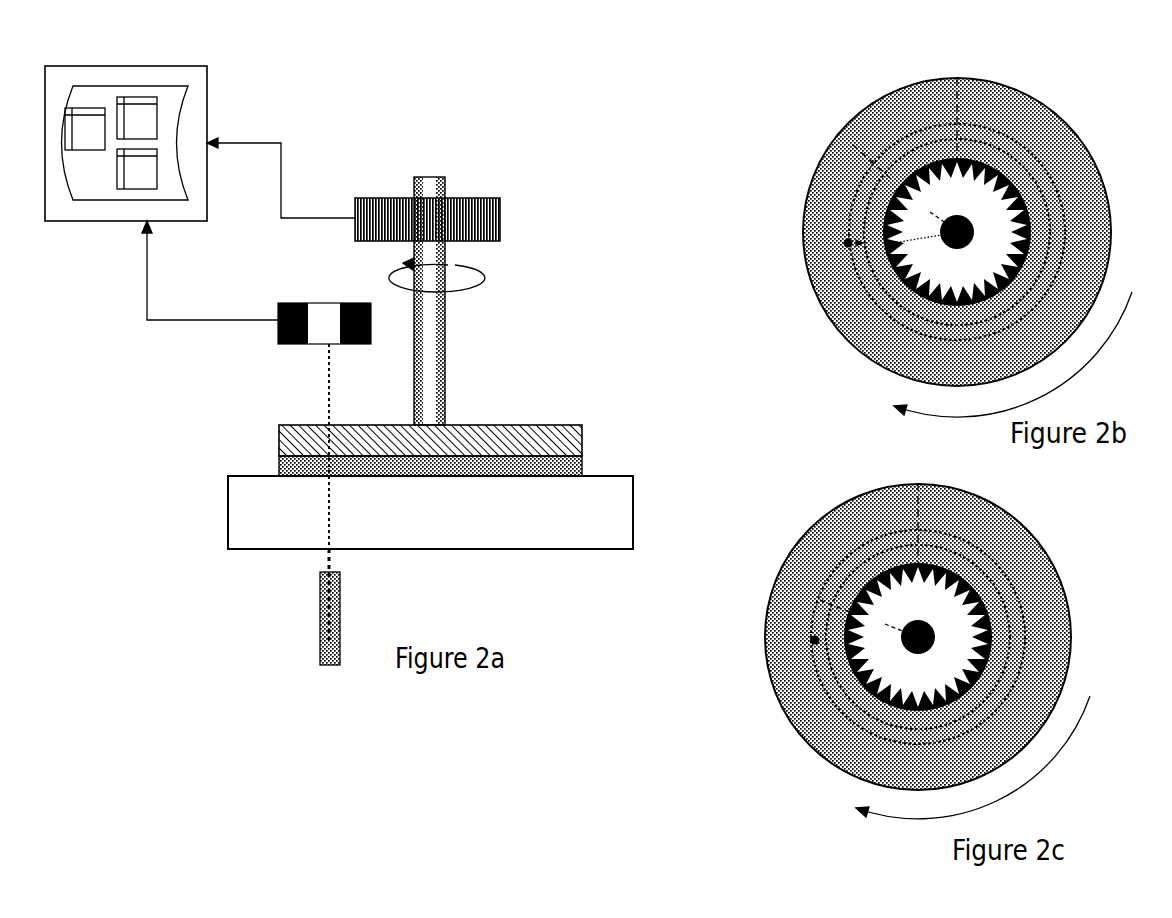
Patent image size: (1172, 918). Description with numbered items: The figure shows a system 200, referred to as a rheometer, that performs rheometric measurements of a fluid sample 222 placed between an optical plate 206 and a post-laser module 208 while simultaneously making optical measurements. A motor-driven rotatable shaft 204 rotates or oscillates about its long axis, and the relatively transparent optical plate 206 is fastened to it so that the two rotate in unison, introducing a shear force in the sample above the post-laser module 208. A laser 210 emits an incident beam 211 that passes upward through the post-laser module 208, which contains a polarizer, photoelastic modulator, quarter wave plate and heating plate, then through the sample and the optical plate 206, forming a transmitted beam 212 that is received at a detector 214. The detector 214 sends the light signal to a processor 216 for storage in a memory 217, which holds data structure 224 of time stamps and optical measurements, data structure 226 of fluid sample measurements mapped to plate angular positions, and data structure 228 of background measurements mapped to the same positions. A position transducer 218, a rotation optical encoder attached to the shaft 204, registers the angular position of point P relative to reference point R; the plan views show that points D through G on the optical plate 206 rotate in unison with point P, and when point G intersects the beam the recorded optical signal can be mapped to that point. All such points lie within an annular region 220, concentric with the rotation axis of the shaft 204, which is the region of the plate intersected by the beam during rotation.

In FIG. 2A, the system 200 is at (180, 598).
In FIG. 2A, the rotatable shaft 204 is at (430, 377).
In FIG. 2B, the rotatable shaft 204 is at (945, 243).
In FIG. 2C, the rotatable shaft 204 is at (904, 650).
In FIG. 2A, the optical plate 206 is at (582, 430).
In FIG. 2B, the optical plate 206 is at (812, 196).
In FIG. 2C, the optical plate 206 is at (793, 575).
In FIG. 2A, the post-laser module 208 is at (238, 487).
In FIG. 2A, the laser 210 is at (340, 598).
In FIG. 2A, the incident beam 211 is at (325, 558).
In FIG. 2B, the incident beam 211 is at (848, 243).
In FIG. 2C, the incident beam 211 is at (815, 640).
In FIG. 2A, the transmitted beam 212 is at (328, 362).
In FIG. 2A, the detector 214 is at (323, 308).
In FIG. 2A, the processor 216 is at (207, 202).
In FIG. 2A, the memory 217 is at (168, 117).
In FIG. 2A, the position transducer 218 is at (500, 200).
In FIG. 2B, the position transducer 218 is at (923, 300).
In FIG. 2C, the position transducer 218 is at (910, 717).
In FIG. 2C, the annular region 220 is at (833, 708).
In FIG. 2A, the fluid sample 222 is at (582, 470).
In FIG. 2A, the data structure 224 is at (135, 105).
In FIG. 2A, the data structure 226 is at (125, 190).
In FIG. 2A, the data structure 228 is at (85, 150).